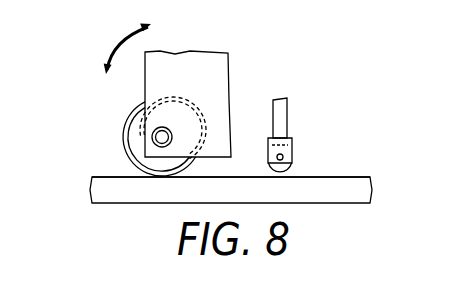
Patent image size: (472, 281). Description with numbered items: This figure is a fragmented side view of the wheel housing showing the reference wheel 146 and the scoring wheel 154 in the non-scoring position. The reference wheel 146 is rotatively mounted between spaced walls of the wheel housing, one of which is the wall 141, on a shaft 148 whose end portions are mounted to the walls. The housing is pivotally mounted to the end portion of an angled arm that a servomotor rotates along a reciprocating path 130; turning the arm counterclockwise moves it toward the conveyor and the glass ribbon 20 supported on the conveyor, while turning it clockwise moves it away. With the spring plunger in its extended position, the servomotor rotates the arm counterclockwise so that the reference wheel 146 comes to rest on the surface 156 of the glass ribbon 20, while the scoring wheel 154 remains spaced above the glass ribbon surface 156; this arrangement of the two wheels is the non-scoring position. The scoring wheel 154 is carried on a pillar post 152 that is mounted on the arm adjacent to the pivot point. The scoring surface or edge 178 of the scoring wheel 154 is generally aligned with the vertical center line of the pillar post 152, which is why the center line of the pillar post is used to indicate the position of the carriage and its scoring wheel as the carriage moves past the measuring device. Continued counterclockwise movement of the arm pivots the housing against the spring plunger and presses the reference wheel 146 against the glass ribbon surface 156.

The glass ribbon 20 is at (128, 216).
The reciprocating path 130 is at (116, 42).
The wall 141 is at (214, 67).
The reference wheel 146 is at (124, 151).
The shaft 148 is at (154, 129).
The pillar post 152 is at (296, 114).
The scoring wheel 154 is at (293, 156).
The glass ribbon surface 156 is at (346, 177).
The scoring surface or edge 178 is at (288, 165).